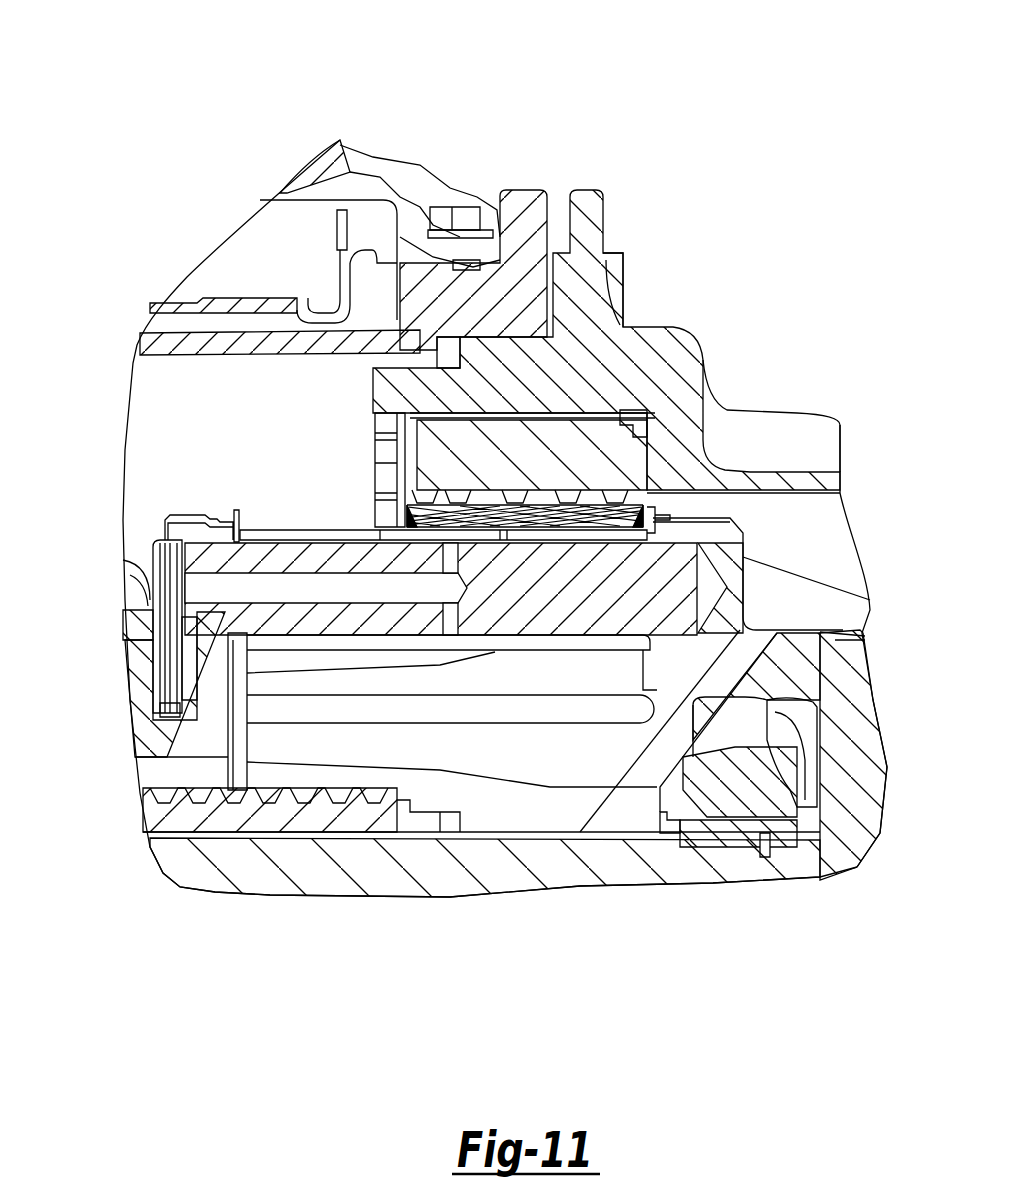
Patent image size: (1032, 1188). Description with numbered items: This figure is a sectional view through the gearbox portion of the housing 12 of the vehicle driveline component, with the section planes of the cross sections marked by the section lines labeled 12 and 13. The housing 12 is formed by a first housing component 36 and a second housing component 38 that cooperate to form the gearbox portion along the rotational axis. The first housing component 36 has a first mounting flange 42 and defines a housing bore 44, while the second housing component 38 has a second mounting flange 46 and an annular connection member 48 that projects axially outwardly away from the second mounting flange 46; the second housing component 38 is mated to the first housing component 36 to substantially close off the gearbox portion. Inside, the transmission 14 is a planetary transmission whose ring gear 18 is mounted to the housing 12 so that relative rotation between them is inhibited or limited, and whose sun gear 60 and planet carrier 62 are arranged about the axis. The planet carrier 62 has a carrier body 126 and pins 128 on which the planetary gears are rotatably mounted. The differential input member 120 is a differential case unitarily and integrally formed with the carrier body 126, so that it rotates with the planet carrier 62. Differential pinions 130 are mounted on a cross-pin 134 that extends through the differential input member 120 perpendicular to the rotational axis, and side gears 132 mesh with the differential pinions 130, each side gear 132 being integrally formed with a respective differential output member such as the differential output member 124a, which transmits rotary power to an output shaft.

The housing 12 is at (496, 27).
The section line 13- 13 is at (570, 102).
The transmission 14 is at (150, 405).
The ring gear 18 is at (605, 463).
The first housing component 36 is at (172, 340).
The second housing component 38 is at (572, 358).
The first mounting flange 42 is at (525, 265).
The housing bore 44 is at (494, 340).
The second mounting flange 46 is at (575, 290).
The annular connection member 48 is at (447, 396).
The sun gear 60 is at (287, 822).
The planet carrier 62 is at (60, 598).
The differential input member 120 is at (772, 673).
The differential output member 124a is at (693, 823).
The carrier body 126 is at (173, 745).
The pins 128 is at (227, 625).
The differential pinions 130 is at (803, 757).
The side gears 132 is at (747, 802).
The cross-pin 134 is at (850, 833).